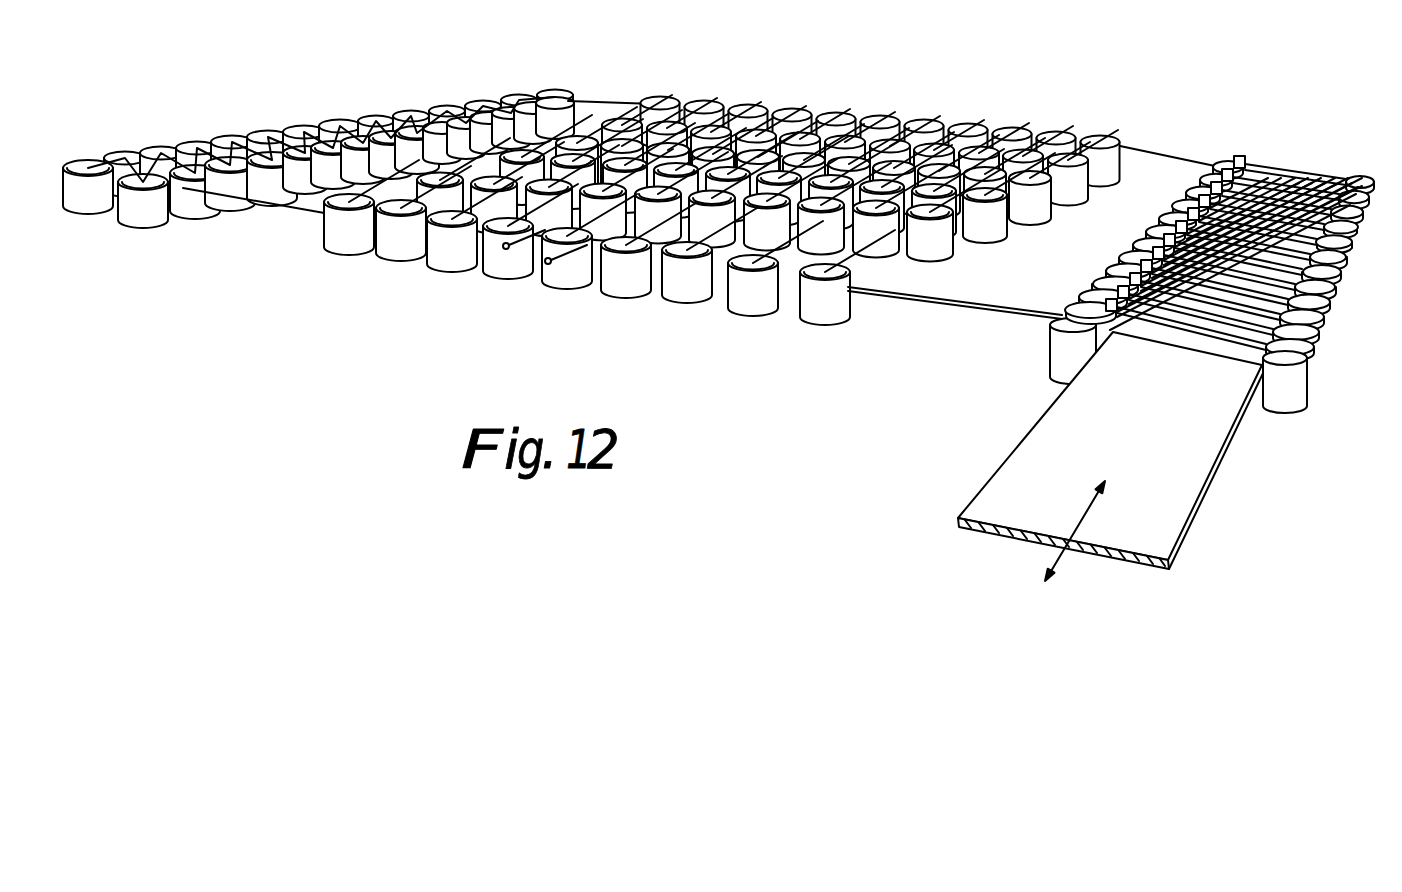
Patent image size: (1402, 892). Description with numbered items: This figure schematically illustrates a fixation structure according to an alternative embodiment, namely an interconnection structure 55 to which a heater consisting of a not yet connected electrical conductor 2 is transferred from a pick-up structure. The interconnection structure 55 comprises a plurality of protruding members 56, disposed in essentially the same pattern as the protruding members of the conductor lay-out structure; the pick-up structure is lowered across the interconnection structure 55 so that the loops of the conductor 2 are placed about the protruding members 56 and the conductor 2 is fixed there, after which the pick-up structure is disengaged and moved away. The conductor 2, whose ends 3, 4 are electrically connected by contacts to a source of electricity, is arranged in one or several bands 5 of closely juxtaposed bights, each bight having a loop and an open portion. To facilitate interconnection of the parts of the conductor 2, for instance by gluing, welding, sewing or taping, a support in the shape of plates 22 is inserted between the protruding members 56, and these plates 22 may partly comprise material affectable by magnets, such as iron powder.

The interconnection structure 55 is at (722, 207).
The protruding member 56 is at (812, 298).
The band 5 is at (1284, 172).
The end of conductor 3 is at (505, 248).
The end of conductor 4 is at (552, 268).
The electrical conductor 2 is at (928, 300).
The plate 22 is at (1037, 445).